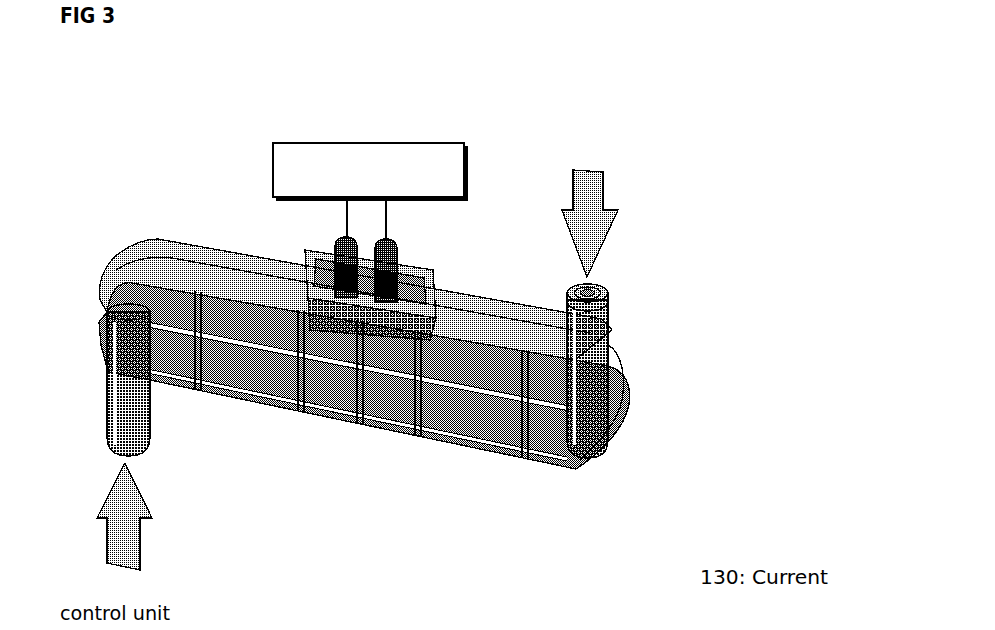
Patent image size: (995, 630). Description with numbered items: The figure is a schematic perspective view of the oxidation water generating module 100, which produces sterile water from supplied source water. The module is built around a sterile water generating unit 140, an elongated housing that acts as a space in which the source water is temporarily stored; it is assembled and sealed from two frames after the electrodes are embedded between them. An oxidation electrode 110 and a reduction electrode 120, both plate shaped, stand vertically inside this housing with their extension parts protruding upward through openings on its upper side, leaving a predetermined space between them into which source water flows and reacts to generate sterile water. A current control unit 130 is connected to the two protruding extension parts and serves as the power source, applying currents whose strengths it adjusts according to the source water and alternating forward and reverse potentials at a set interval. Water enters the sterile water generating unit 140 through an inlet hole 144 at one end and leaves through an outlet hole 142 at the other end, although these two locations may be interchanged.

The oxidation water generating module 100 is at (132, 106).
The oxidation electrode 110 is at (399, 254).
The reduction electrode 120 is at (336, 250).
The current control unit 130 is at (415, 143).
The sterile water generating unit 140 is at (609, 347).
The outlet hole 142 is at (609, 290).
The inlet hole 144 is at (128, 463).